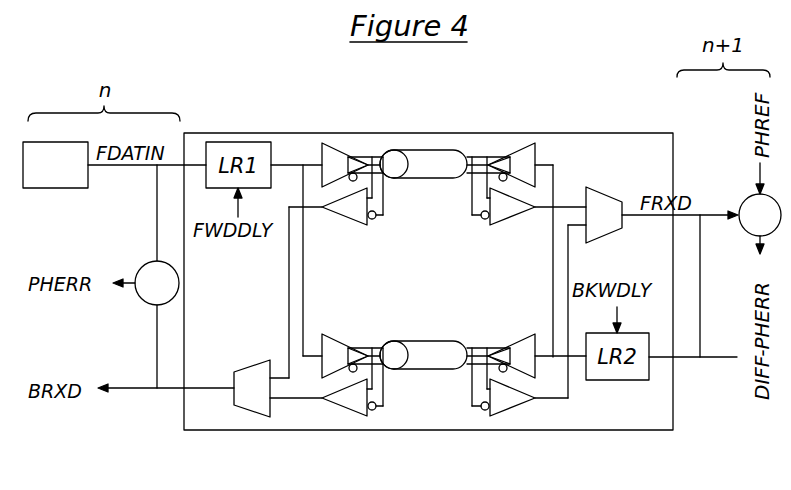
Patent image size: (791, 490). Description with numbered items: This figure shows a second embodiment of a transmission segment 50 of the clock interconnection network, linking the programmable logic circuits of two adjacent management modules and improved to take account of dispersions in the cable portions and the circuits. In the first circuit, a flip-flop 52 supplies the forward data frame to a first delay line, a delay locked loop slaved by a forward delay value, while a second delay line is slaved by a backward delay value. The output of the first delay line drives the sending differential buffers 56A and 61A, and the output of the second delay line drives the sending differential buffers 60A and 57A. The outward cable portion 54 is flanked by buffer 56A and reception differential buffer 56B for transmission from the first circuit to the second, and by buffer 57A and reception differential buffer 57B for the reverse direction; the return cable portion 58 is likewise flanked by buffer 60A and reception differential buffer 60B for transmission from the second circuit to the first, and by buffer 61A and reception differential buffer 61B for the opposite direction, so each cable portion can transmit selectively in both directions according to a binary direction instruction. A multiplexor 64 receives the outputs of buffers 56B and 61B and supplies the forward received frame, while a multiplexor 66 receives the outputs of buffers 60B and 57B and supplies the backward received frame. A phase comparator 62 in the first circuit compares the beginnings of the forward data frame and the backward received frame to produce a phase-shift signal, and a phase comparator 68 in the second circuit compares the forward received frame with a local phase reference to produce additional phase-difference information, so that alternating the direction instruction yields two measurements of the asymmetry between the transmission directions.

The transmission segment 50 is at (370, 133).
The flip-flop 52 is at (55, 165).
The outward cable portion 54 is at (432, 170).
The sending differential buffer 56A is at (322, 144).
The reception differential buffer 56B is at (515, 222).
The sending differential buffer 57A is at (532, 144).
The reception differential buffer 57B is at (358, 222).
The return cable portion 58 is at (432, 362).
The sending differential buffer 60A is at (530, 340).
The reception differential buffer 60B is at (360, 417).
The sending differential buffer 61A is at (330, 340).
The reception differential buffer 61B is at (510, 417).
The phase comparator 62 is at (157, 283).
The multiplexor 64 is at (604, 215).
The multiplexor 66 is at (252, 388).
The phase comparator 68 is at (760, 215).